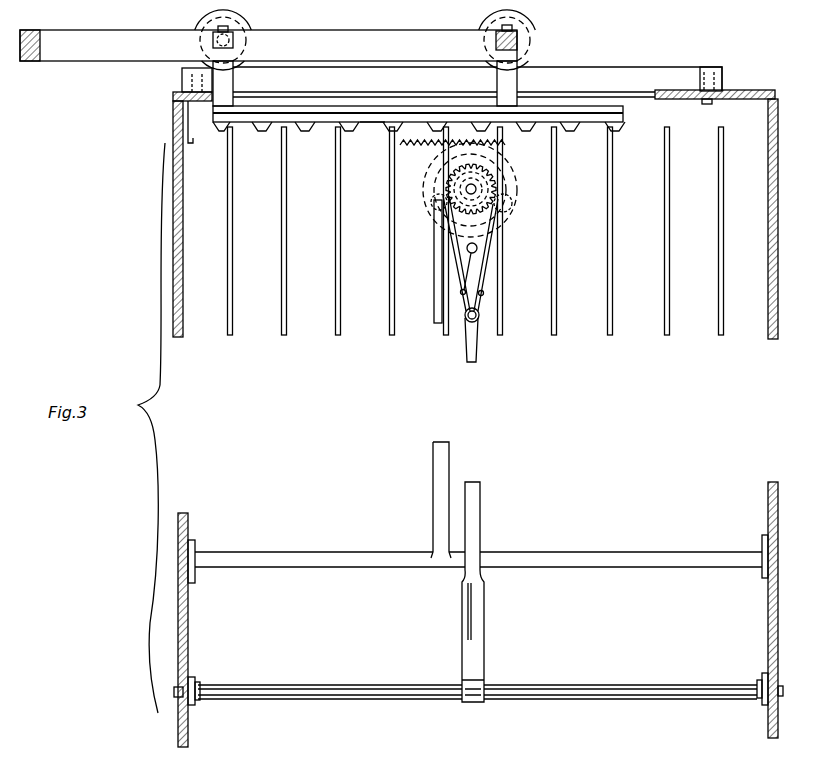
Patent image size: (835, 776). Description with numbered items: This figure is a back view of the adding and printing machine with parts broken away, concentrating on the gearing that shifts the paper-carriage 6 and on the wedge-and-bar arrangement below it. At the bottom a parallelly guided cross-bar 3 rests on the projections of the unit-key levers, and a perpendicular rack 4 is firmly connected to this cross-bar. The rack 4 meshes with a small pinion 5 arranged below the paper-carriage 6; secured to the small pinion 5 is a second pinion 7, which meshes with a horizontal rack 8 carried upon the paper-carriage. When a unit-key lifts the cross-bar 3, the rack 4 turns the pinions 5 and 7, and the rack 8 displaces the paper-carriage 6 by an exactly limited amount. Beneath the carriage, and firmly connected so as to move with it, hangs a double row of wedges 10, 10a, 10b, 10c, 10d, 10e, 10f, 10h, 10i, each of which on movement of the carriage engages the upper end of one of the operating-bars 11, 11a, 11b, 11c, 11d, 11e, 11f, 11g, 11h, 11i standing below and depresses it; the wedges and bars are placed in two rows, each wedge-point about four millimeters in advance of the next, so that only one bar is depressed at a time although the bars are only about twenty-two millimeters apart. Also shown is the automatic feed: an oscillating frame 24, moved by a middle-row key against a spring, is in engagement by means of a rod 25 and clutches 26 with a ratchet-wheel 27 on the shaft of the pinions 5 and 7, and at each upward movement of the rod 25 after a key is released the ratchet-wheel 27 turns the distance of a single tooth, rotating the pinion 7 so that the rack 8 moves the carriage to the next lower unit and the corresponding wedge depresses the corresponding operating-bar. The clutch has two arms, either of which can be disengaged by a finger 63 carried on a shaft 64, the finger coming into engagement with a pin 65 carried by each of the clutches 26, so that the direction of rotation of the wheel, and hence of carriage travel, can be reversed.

The cross-bar 3 is at (478, 559).
The perpendicular rack 4 is at (428, 481).
The small pinion 5 is at (468, 167).
The paper-carriage 6 is at (544, 37).
The second pinion 7 is at (513, 168).
The horizontal rack 8 is at (373, 134).
The wedge 10 is at (220, 133).
The wedge 10a is at (265, 133).
The wedge 10b is at (305, 133).
The wedge 10c is at (437, 123).
The wedge 10d is at (392, 126).
The wedge 10e is at (527, 123).
The wedge 10f is at (492, 133).
The wedge 10h is at (572, 132).
The wedge 10i is at (616, 131).
The operating-bar 11 is at (227, 260).
The operating-bar 11a is at (287, 251).
The operating-bar 11b is at (335, 283).
The operating-bar 11c is at (348, 137).
The operating-bar 11d is at (446, 231).
The operating-bar 11e is at (500, 292).
The operating-bar 11f is at (552, 236).
The operating-bar 11g is at (612, 242).
The operating-bar 11h is at (668, 268).
The operating-bar 11i is at (725, 282).
The oscillating frame 24 is at (197, 701).
The rod 25 is at (480, 345).
The clutch 26 is at (508, 207).
The ratchet-wheel 27 is at (452, 168).
The finger 63 is at (474, 266).
The shaft 64 is at (468, 252).
The pin 65 is at (461, 291).